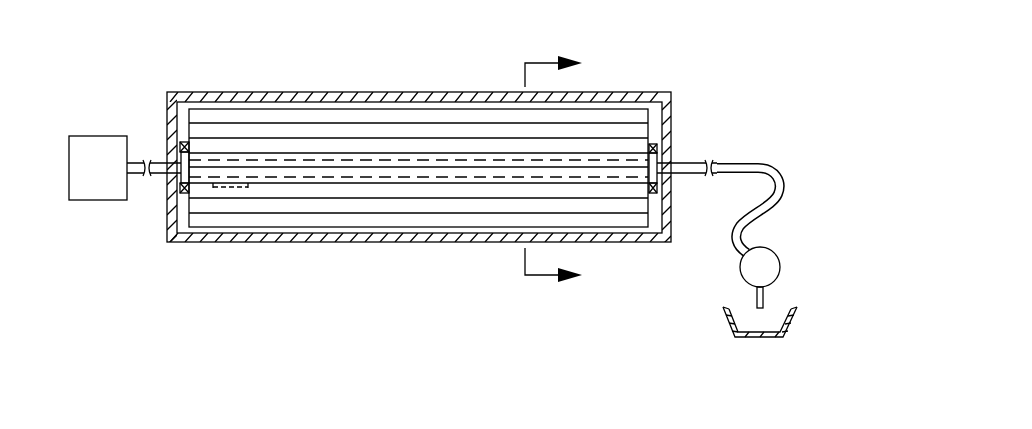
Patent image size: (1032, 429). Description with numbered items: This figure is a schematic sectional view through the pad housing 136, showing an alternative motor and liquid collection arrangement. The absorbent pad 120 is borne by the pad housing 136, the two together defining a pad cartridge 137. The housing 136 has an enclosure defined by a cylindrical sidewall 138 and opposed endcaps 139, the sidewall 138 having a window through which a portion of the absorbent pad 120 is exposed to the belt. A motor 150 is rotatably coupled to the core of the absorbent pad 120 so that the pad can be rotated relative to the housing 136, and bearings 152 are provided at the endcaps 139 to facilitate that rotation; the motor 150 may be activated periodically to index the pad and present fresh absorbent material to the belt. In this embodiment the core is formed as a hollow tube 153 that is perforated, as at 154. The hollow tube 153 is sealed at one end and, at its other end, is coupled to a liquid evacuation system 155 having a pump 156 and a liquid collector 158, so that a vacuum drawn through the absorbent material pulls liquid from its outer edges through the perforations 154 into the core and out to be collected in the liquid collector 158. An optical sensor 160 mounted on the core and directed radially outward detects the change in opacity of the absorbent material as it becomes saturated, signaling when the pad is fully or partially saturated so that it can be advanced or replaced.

The absorbent pad 120 is at (323, 98).
The pad housing 136 is at (462, 92).
The pad cartridge 137 is at (216, 48).
The cylindrical sidewall 138 is at (318, 242).
The endcaps 139 is at (167, 229).
The motor 150 is at (85, 136).
The bearings 152 is at (180, 146).
The hollow tube 153 is at (389, 140).
The perforations 154 is at (480, 178).
The liquid evacuation system 155 is at (760, 143).
The pump 156 is at (781, 267).
The liquid collector 158 is at (794, 316).
The optical sensor 160 is at (233, 188).